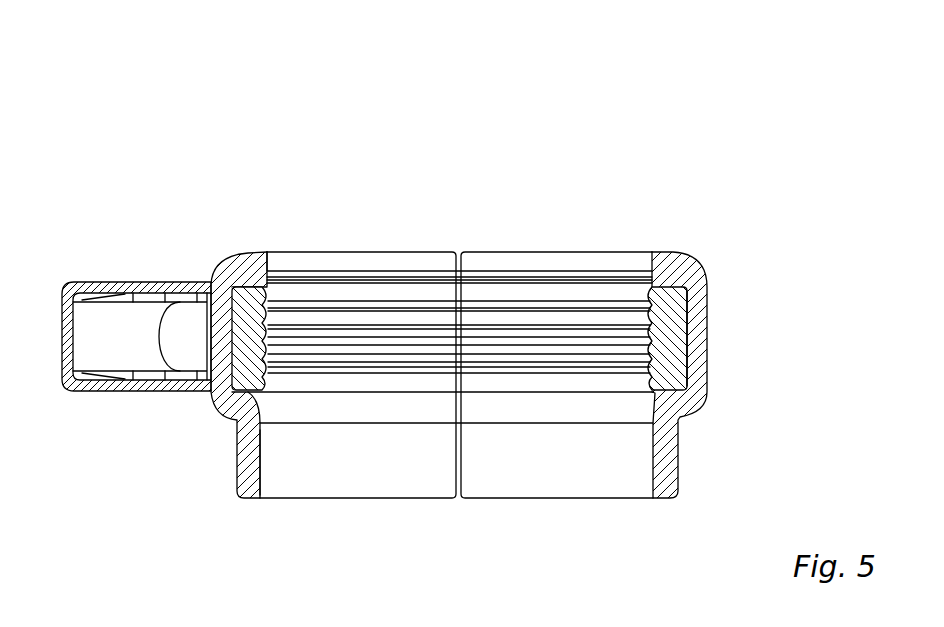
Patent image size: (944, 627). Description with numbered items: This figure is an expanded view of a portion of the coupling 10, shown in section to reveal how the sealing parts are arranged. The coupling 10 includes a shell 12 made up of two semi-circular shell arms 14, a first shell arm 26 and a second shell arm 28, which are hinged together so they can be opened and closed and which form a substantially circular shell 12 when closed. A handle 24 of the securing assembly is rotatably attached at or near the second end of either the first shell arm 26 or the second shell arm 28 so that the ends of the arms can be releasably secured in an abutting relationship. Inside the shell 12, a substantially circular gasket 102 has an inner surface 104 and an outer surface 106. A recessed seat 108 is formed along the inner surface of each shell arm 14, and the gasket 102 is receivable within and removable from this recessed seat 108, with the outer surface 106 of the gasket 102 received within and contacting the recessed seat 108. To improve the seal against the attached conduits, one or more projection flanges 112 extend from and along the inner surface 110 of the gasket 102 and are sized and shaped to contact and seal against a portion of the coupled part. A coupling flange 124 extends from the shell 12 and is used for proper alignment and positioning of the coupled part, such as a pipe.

The coupling 10 is at (543, 133).
The shell 12 is at (135, 445).
The shell arm 14 is at (225, 442).
The handle 24 is at (125, 277).
The first shell arm 26 is at (243, 478).
The second shell arm 28 is at (665, 460).
The gasket 102 is at (313, 280).
The inner surface 104 is at (306, 284).
The outer surface 106 is at (687, 322).
The recessed seat 108 is at (690, 345).
The inner surface 110 is at (692, 300).
The projection flange 112 is at (413, 310).
The coupling flange 124 is at (262, 455).